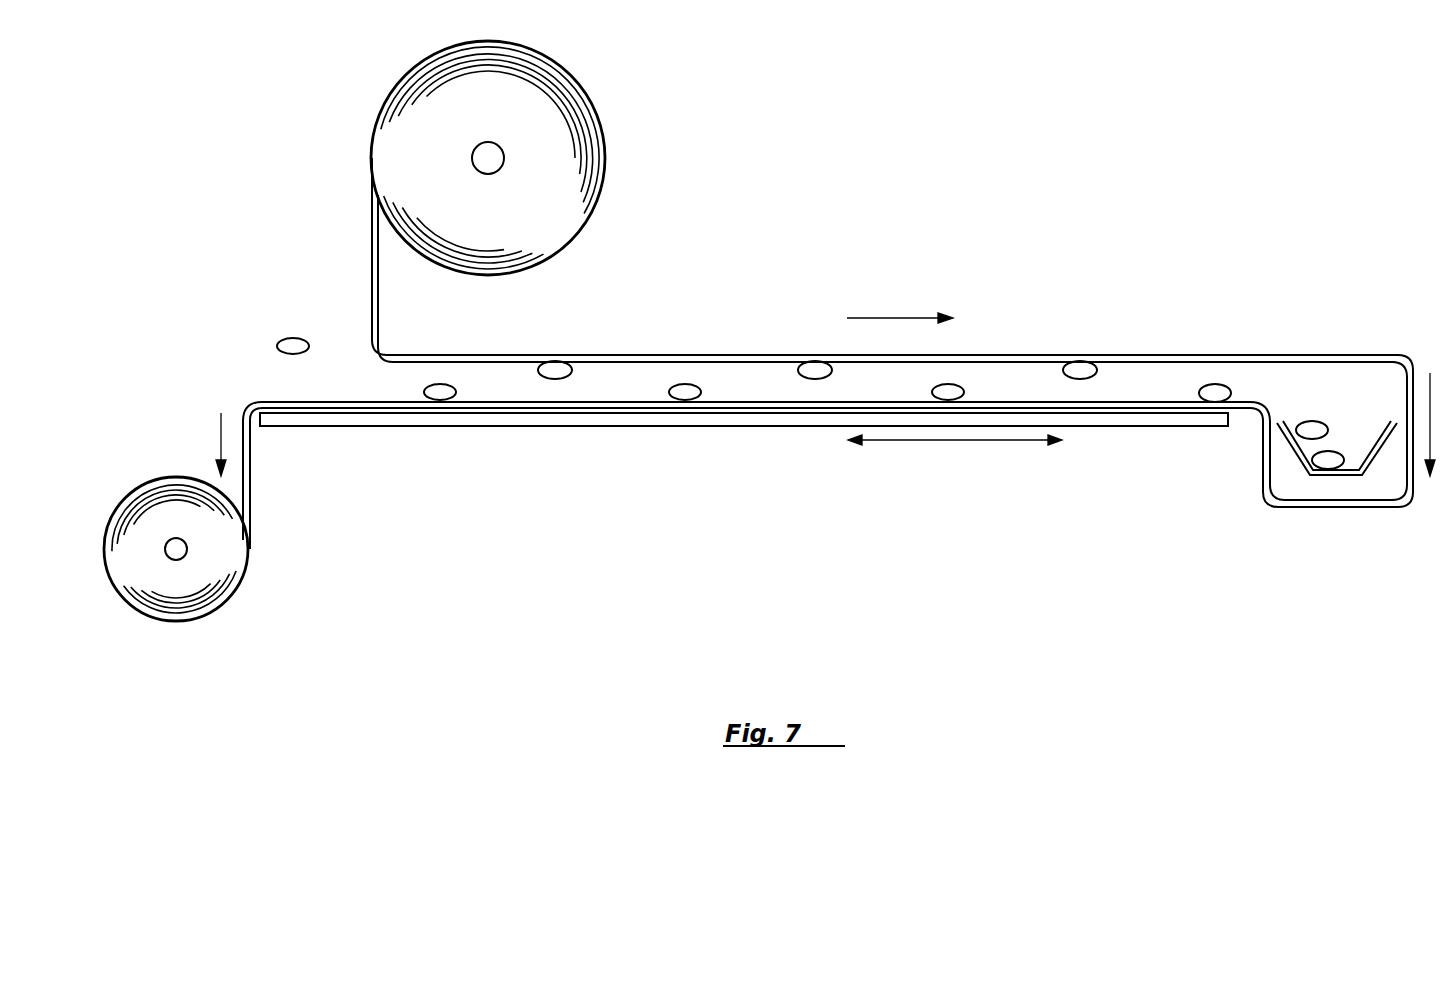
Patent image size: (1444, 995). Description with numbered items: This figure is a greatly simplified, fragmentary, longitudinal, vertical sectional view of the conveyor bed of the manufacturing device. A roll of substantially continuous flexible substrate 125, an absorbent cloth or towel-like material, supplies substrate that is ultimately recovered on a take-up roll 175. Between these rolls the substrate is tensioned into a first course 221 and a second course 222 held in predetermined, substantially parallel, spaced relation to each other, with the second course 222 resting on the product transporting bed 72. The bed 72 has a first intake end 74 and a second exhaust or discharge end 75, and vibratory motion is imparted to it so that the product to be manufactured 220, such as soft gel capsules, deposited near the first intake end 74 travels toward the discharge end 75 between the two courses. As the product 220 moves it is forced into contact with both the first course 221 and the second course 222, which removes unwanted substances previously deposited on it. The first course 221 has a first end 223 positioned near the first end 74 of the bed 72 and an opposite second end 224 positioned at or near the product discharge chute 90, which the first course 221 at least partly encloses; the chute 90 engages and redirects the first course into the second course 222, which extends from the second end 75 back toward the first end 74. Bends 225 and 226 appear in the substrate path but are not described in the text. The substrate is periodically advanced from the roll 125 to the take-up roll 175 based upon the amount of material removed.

The roll of substantially continuous flexible substrate 125 is at (565, 173).
The take-up roll 175 is at (190, 582).
The product to be manufactured 220 is at (293, 340).
The first course 221 is at (800, 358).
The second course 222 is at (1107, 402).
The first end of the first course 223 is at (402, 353).
The second end of the first course 224 is at (1410, 503).
The web bend 225 is at (1260, 407).
The web bend 226 is at (258, 400).
The product transporting bed 72 is at (745, 428).
The first intake end 74 is at (283, 428).
The second exhaust or discharge end 75 is at (1200, 427).
The product discharge chute 90 is at (1375, 432).